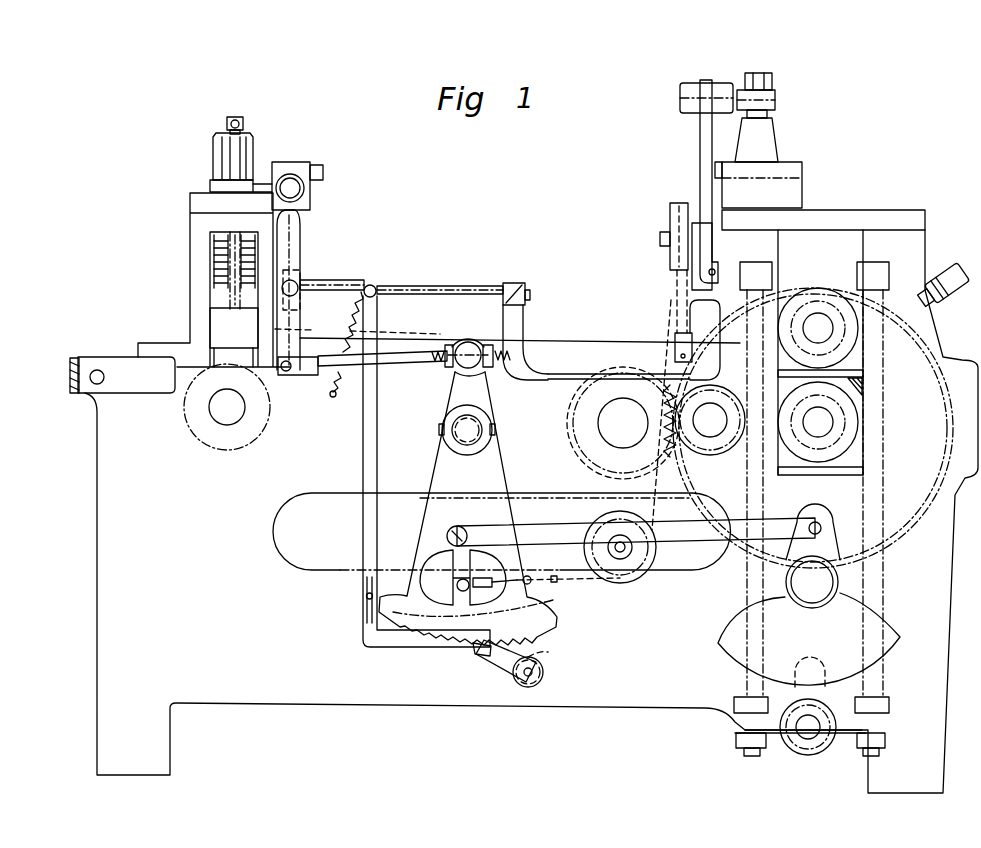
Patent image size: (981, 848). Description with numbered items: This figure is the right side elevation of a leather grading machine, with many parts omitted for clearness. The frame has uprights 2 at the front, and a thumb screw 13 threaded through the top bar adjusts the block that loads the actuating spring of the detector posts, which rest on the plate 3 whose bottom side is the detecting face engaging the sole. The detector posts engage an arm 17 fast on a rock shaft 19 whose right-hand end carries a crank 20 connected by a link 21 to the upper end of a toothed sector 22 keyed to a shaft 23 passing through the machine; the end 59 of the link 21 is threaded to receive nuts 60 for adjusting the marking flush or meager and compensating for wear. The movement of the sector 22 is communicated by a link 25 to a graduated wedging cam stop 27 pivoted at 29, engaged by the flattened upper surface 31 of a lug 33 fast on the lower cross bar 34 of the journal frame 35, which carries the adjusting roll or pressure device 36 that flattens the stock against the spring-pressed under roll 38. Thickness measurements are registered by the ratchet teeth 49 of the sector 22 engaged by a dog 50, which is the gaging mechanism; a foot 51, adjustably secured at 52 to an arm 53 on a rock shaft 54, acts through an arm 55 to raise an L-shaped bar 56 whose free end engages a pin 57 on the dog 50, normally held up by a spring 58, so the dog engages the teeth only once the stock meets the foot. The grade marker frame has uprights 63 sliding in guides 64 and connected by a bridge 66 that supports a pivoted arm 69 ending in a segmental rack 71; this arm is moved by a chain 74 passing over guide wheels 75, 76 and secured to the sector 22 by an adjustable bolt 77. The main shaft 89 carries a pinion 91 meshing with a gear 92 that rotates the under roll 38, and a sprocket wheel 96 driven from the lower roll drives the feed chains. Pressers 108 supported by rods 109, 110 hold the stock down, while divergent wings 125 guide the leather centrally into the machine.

The uprights 2 is at (190, 273).
The plate 3 is at (234, 360).
The thumb screw 13 is at (243, 125).
The arm or lever 17 is at (272, 192).
The rock shaft 19 is at (304, 192).
The crank 20 is at (301, 238).
The link 21 is at (318, 375).
The toothed sector 22 is at (435, 532).
The shaft 23 is at (457, 432).
The link 25 is at (631, 534).
The cam stop 27 is at (809, 640).
The pivot 29 is at (813, 556).
The flattened upper surface 31 is at (800, 705).
The lug 33 is at (797, 748).
The lower cross bar 34 is at (845, 740).
The journal frame 35 is at (880, 462).
The adjusting roll or pressure device 36 is at (818, 288).
The under roll 38 is at (840, 422).
The teeth 49 is at (538, 635).
The dog 50 is at (518, 676).
The foot 51 is at (526, 322).
The adjustable securing point 52 is at (520, 290).
The arm 53 is at (440, 287).
The rock shaft 54 is at (306, 283).
The arm 55 is at (352, 298).
The L-shaped bar 56 is at (410, 647).
The pin 57 is at (478, 652).
The spring 58 is at (546, 657).
The end of link 59 is at (437, 351).
The nuts 60 is at (452, 366).
The uprights 63 is at (768, 116).
The guides 64 is at (770, 145).
The bridge 66 is at (773, 98).
The pivoted arm 69 is at (700, 133).
The segmental rack 71 is at (716, 272).
The chain 74 is at (676, 303).
The guide wheel 75 is at (670, 255).
The guide wheel 76 is at (622, 582).
The adjustable bolt 77 is at (532, 582).
The main shaft 89 is at (623, 423).
The pinion 91 is at (572, 426).
The gear 92 is at (658, 462).
The sprocket wheel 96 is at (712, 456).
The pressers 108 is at (602, 348).
The rod 109 is at (357, 331).
The rod 110 is at (675, 343).
The divergent wings 125 is at (78, 358).